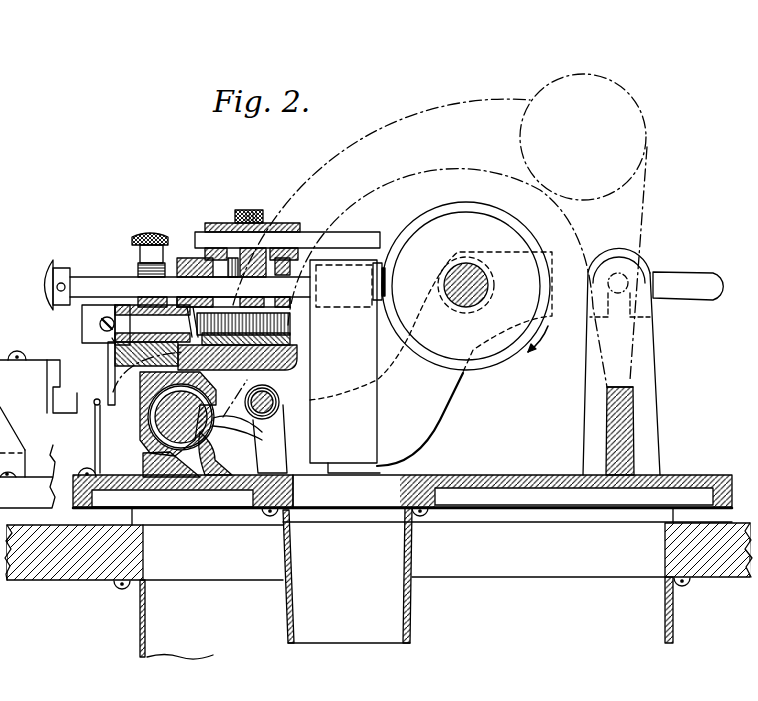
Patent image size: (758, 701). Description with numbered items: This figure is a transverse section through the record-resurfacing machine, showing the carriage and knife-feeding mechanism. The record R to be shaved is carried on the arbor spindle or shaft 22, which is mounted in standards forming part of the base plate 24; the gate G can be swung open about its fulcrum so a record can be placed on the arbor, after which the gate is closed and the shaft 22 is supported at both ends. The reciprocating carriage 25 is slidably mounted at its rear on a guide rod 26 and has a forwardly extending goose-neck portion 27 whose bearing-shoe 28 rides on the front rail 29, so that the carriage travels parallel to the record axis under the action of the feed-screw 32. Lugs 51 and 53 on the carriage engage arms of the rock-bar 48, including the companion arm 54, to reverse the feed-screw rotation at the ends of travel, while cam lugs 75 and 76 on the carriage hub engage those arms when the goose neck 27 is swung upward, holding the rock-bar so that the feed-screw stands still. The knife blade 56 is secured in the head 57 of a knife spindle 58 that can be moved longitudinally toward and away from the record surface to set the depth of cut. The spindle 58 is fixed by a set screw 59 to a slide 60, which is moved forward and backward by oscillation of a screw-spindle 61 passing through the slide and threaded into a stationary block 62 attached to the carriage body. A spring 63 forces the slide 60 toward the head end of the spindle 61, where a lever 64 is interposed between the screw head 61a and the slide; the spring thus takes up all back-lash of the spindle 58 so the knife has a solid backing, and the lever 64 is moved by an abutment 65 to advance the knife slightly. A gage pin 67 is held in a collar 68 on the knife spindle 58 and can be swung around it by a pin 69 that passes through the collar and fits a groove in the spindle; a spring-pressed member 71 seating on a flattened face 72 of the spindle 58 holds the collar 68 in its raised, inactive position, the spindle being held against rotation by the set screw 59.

The shaft 22 is at (464, 307).
The base plate 24 is at (512, 475).
The carriage 25 is at (298, 367).
The guide rod 26 is at (156, 419).
The goose-neck portion 27 is at (443, 113).
The bearing-shoe 28 is at (637, 381).
The front rail 29 is at (612, 413).
The feed-screw 32 is at (275, 394).
The rock-bar 48 is at (205, 479).
The lug 51 is at (164, 479).
The lug 53 is at (218, 422).
The companion arm 54 is at (280, 441).
The knife blade 56 is at (386, 291).
The head 57 is at (336, 309).
The spindle 58 is at (186, 275).
The set screw 59 is at (144, 234).
The slide 60 is at (119, 344).
The screw-spindle 61 is at (112, 338).
The screw head 61a is at (86, 325).
The stationary block 62 is at (290, 344).
The spring 63 is at (188, 322).
The lever 64 is at (108, 371).
The abutment 65 is at (100, 443).
The gage pin 67 is at (331, 243).
The collar 68 is at (272, 229).
The pin 69 is at (248, 262).
The spring-pressed member 71 is at (239, 300).
The flattened face 72 is at (211, 279).
The cam lug 75 is at (150, 441).
The cam lug 76 is at (232, 442).
The gate G is at (448, 398).
The record R is at (422, 214).